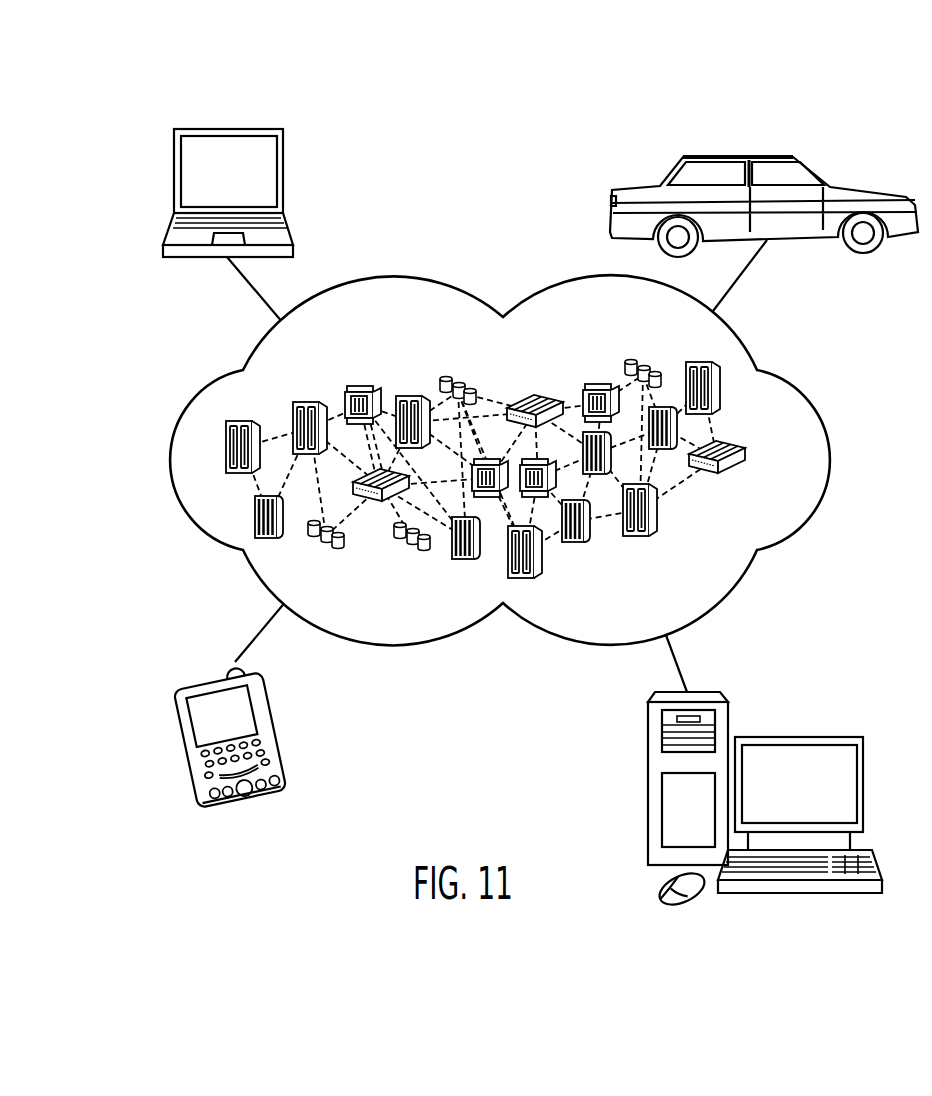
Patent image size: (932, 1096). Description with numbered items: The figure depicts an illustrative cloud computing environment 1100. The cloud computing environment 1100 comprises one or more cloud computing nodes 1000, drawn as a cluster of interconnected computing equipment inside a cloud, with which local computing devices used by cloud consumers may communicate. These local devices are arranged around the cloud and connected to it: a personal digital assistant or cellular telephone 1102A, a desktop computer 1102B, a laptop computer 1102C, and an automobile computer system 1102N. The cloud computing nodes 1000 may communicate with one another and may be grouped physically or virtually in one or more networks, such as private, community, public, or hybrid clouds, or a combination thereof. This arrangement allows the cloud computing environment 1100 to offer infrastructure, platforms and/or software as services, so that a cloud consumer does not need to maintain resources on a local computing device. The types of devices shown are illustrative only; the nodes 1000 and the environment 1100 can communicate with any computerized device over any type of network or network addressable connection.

The cloud computing environment 1100 is at (836, 76).
The cloud computing nodes 1000 is at (513, 338).
The laptop computer 1102C is at (228, 128).
The automobile computer system 1102N is at (742, 153).
The personal digital assistant (PDA) or cellular telephone 1102A is at (210, 678).
The desktop computer 1102B is at (800, 735).